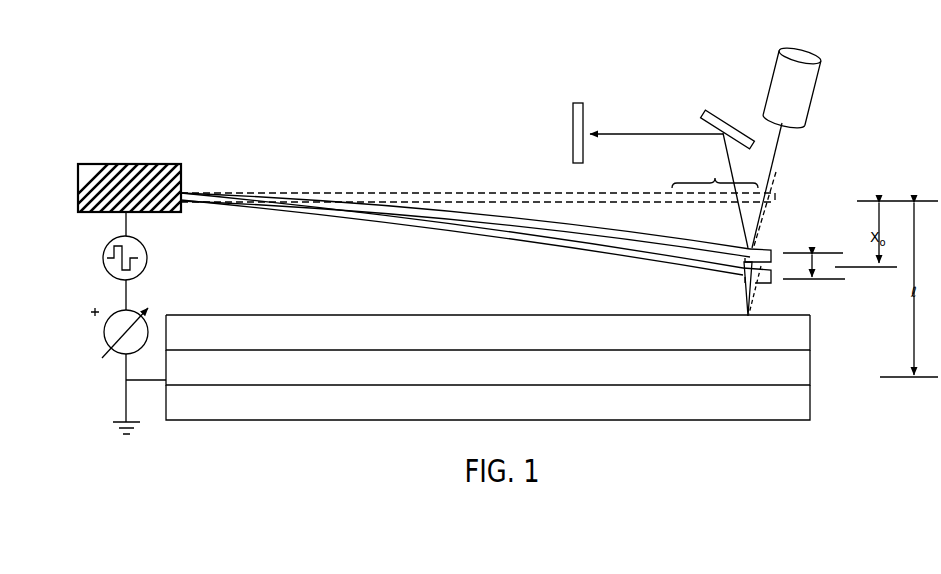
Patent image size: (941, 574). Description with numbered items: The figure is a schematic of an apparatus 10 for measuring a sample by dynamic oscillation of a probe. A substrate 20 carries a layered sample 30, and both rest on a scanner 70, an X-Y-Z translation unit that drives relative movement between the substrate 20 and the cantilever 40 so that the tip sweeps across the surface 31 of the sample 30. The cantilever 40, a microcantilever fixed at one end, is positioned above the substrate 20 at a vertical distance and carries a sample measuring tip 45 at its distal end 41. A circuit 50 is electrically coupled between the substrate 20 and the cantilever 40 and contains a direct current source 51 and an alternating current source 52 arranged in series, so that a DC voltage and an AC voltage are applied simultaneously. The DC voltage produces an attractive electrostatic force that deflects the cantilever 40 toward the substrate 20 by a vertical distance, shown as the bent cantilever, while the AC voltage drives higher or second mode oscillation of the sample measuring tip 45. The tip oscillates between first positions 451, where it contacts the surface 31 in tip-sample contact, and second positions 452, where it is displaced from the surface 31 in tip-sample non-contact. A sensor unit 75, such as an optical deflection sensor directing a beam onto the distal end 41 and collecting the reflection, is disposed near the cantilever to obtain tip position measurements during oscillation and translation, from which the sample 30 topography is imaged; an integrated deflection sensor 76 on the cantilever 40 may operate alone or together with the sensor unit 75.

The apparatus 10 is at (776, 178).
The substrate 20 is at (802, 365).
The sample 30 is at (802, 330).
The surface 31 is at (786, 307).
The cantilever 40 is at (270, 190).
The distal end 41 is at (715, 175).
The sample measuring tip 45 is at (745, 289).
The circuit 50 is at (122, 379).
The direct current source 51 is at (104, 337).
The alternating current source 52 is at (146, 270).
The scanner 70 is at (802, 400).
The sensor unit 75 is at (756, 80).
The integrated deflection sensor 76 is at (741, 241).
The first positions 451 is at (838, 282).
The second positions 452 is at (829, 251).